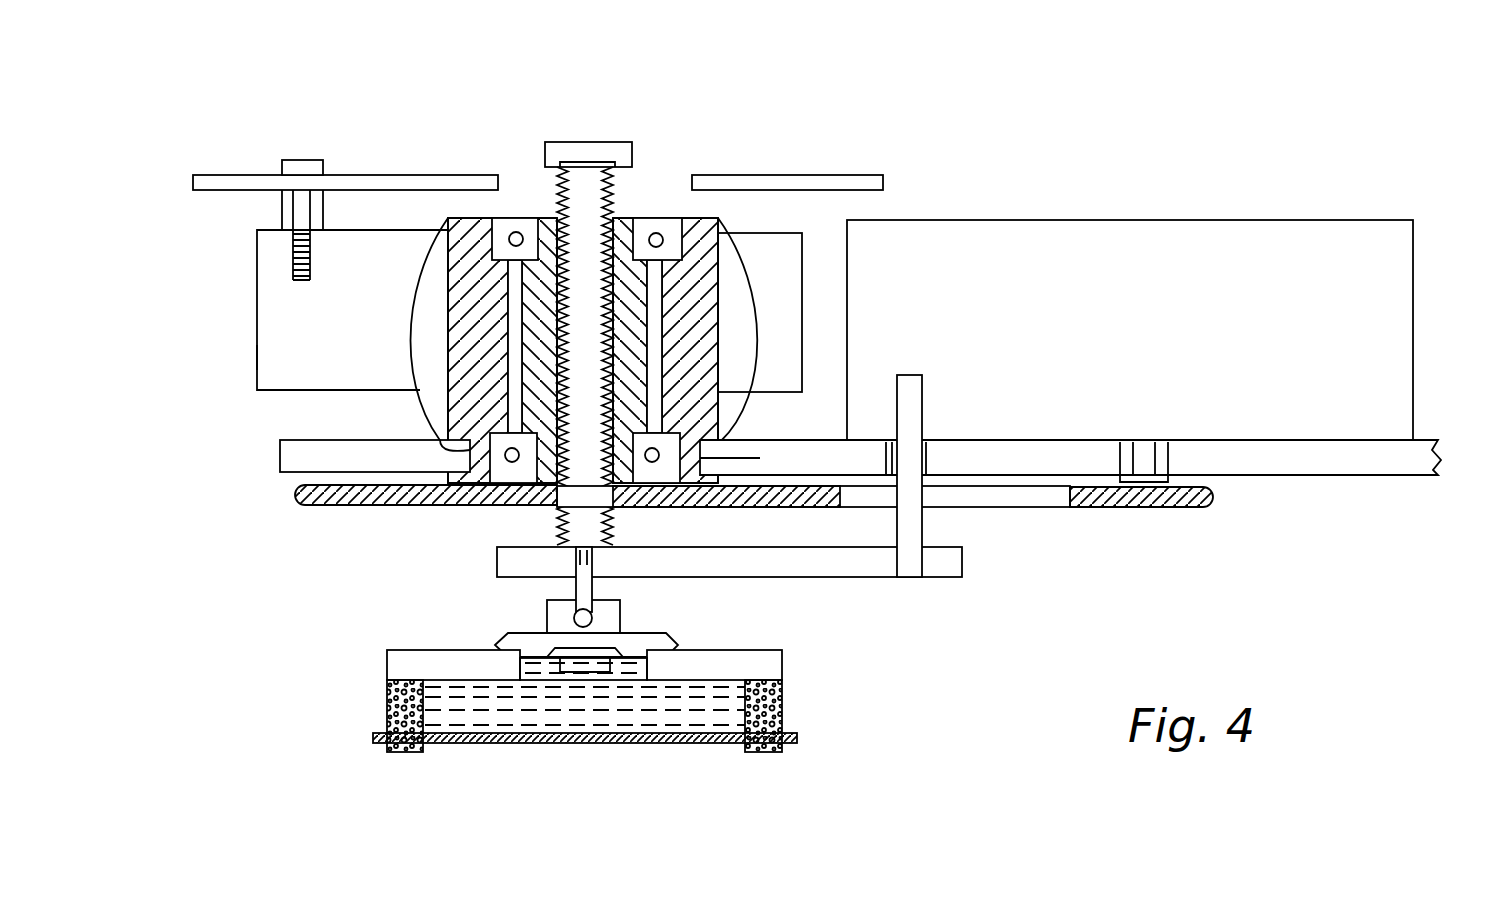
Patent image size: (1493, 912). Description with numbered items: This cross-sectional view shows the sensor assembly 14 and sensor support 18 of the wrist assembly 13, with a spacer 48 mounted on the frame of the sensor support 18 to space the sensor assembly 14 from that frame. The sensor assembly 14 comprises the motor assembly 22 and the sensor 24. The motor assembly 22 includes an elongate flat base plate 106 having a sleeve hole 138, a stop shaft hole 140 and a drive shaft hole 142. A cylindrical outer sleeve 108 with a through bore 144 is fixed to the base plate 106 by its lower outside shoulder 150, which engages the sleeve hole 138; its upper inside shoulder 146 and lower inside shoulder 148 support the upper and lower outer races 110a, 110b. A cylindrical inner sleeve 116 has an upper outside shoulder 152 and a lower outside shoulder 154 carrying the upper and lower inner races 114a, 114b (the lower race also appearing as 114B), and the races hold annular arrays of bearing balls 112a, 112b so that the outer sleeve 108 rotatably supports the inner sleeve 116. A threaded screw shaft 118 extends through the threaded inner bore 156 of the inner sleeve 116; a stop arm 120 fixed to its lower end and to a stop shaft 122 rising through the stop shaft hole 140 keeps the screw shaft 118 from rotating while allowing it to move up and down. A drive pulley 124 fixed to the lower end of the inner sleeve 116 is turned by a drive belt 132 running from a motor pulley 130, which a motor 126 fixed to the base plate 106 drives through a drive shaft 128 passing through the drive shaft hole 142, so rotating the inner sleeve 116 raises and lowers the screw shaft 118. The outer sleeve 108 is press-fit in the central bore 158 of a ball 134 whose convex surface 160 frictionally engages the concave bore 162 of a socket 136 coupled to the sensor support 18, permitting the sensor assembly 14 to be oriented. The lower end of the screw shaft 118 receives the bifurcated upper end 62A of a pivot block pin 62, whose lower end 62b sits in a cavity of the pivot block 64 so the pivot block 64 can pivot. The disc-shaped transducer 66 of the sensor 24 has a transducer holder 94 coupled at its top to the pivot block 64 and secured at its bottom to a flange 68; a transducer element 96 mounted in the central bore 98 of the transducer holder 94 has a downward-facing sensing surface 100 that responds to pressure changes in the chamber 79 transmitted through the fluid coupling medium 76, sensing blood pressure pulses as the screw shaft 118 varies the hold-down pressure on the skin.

The wrist assembly 13 is at (191, 146).
The sensor support 18 is at (254, 168).
The spacer 48 is at (282, 212).
The sensor assembly 14 is at (205, 265).
The motor assembly 22 is at (257, 314).
The socket 136 is at (257, 354).
The ball 134 is at (425, 380).
The upper inside shoulder 146 is at (492, 233).
The outer sleeve 108 is at (460, 290).
The bore 144 is at (455, 313).
The lower inner race 114B is at (505, 345).
The lower inner race 114b is at (720, 345).
The lower inside shoulder 148 is at (450, 377).
The lower outside shoulder 150 is at (447, 443).
The drive belt 132 is at (290, 490).
The drive pulley 124 is at (312, 505).
The lower outer race 110b is at (388, 485).
The lower outside shoulder 154 is at (490, 498).
The threaded inner bore 156 is at (547, 502).
The upper end of pivot block pin 62A is at (575, 560).
The transducer holder 94 is at (492, 640).
The pivot block 64 is at (547, 622).
The pivot block pin 62 is at (597, 587).
The lower end of pivot block pin 62b is at (682, 638).
The transducer 66 is at (812, 684).
The flange 68 is at (782, 690).
The fluid coupling medium 76 is at (585, 696).
The transducer element 96 is at (567, 655).
The sensing surface 100 is at (583, 652).
The central bore 98 is at (605, 655).
The chamber 79 is at (642, 722).
The sensor 24 is at (830, 742).
The upper outer race 110a is at (492, 222).
The bearing balls 112a is at (495, 217).
The upper inner race 114a is at (517, 217).
The threaded screw shaft 118 is at (562, 141).
The inner sleeve 116 is at (620, 217).
The upper outside shoulder 152 is at (648, 217).
The central bore 158 is at (745, 265).
The convex surface 160 is at (725, 290).
The concave bore 162 is at (743, 408).
The sleeve hole 138 is at (705, 455).
The bearing balls 112b is at (615, 505).
The stop shaft hole 140 is at (930, 460).
The drive shaft hole 142 is at (1170, 450).
The motor 126 is at (1348, 212).
The drive shaft 128 is at (1172, 468).
The base plate 106 is at (1406, 484).
The stop shaft 122 is at (922, 530).
The motor pulley 130 is at (1153, 495).
The stop arm 120 is at (950, 578).